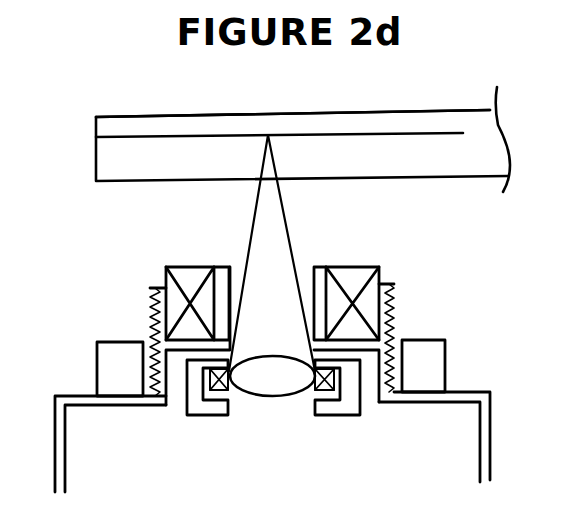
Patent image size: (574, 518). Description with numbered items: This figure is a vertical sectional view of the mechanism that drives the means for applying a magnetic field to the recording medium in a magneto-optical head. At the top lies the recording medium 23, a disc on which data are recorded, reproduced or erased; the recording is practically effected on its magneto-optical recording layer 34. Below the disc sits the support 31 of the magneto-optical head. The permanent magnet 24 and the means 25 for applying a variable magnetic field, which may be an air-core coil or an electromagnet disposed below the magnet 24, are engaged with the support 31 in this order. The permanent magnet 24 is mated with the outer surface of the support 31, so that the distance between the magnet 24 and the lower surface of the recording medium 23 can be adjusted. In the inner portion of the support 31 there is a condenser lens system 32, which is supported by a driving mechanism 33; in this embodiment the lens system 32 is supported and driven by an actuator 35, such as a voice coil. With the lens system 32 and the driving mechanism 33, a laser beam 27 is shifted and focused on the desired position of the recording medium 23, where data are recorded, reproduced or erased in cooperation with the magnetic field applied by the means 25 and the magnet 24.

The recording medium 23 is at (93, 152).
The magneto-optical recording layer 34 is at (436, 122).
The light beam 27 is at (270, 225).
The means for applying a variable magnetic field 25 is at (183, 270).
The permanent magnet 24 is at (128, 342).
The support 31 is at (488, 457).
The condenser lens system 32 is at (267, 388).
The actuator 35 is at (230, 392).
The driving mechanism 33 is at (349, 405).